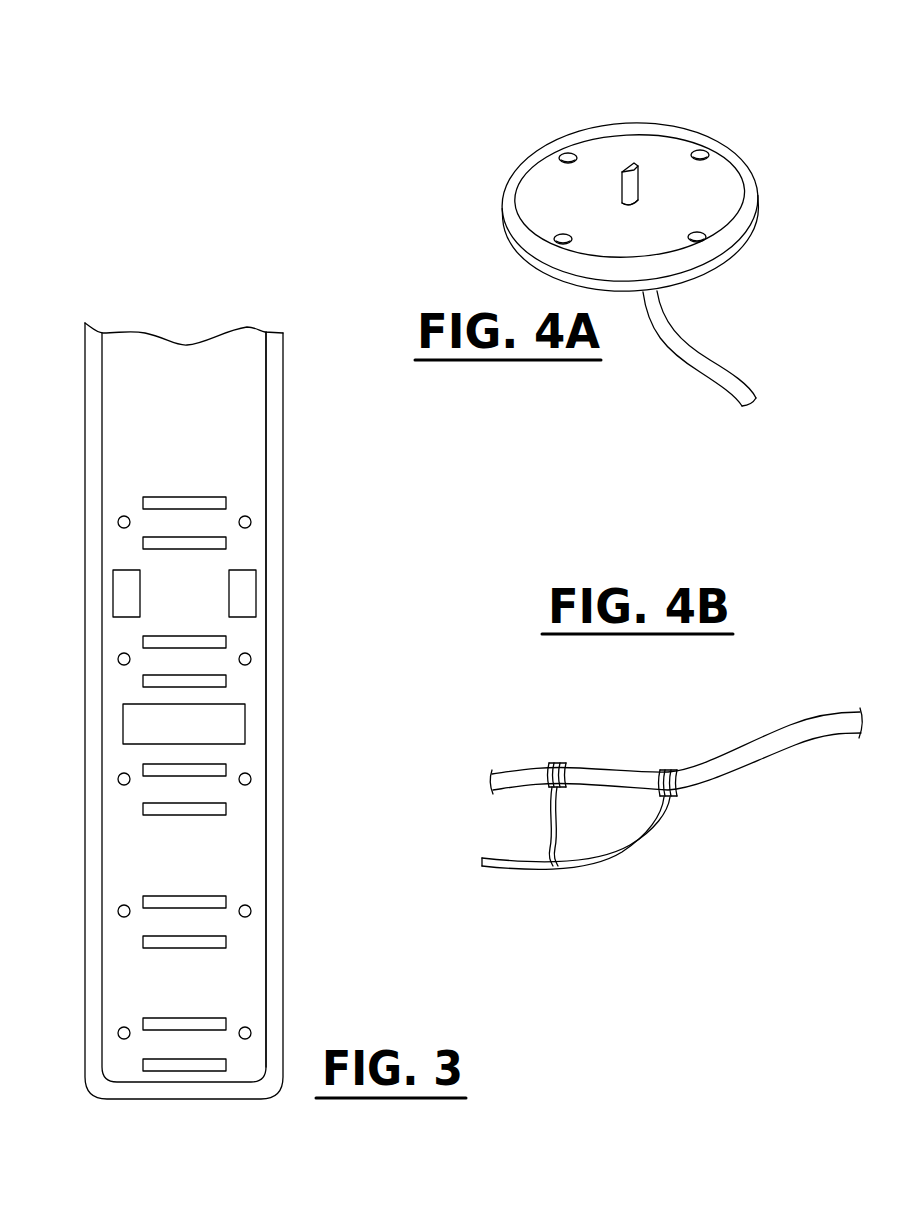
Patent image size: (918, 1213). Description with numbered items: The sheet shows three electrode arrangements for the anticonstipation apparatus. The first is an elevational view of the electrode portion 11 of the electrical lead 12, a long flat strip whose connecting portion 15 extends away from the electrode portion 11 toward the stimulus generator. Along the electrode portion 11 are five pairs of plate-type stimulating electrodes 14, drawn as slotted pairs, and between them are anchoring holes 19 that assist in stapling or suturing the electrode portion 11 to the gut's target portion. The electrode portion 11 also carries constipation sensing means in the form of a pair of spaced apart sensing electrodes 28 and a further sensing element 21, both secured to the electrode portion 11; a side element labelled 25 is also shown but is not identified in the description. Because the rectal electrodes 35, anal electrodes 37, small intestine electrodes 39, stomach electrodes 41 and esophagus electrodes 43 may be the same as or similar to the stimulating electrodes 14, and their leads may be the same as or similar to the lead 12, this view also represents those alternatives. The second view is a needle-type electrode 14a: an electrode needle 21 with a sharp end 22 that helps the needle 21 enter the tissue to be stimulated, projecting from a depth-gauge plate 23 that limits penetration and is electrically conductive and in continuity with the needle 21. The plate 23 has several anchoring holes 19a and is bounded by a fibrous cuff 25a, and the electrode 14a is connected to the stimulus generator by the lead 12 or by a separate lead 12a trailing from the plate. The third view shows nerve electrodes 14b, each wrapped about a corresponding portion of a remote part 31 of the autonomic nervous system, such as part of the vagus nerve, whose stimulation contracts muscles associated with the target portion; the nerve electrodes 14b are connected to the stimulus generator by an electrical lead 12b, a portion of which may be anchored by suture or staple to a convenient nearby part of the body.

In FIG. 3, the electrode portion 11 is at (254, 850).
In FIG. 3, the electrical lead 12 is at (262, 681).
In FIG. 4A, the separate lead 12a is at (742, 385).
In FIG. 4B, the electrical lead 12b is at (512, 866).
In FIG. 3, the stimulating electrodes 14 is at (300, 784).
In FIG. 4A, the needle-type electrode 14a is at (623, 212).
In FIG. 4B, the nerve electrode 14b is at (668, 770).
In FIG. 3, the connecting portion 15 is at (175, 361).
In FIG. 3, the anchoring holes 19 is at (118, 658).
In FIG. 4A, the anchoring holes 19a is at (702, 238).
In FIG. 3, the electrode needle 21 is at (240, 722).
In FIG. 4A, the electrode needle 21 is at (642, 187).
In FIG. 4A, the sharp end 22 is at (637, 170).
In FIG. 4A, the depth-gauge plate 23 is at (725, 179).
In FIG. 3, the side wall 25 is at (275, 497).
In FIG. 4A, the fibrous cuff 25a is at (755, 199).
In FIG. 3, the sensing electrodes 28 is at (138, 595).
In FIG. 4B, the remote part 31 is at (800, 742).
In FIG. 3, the rectal electrodes 35 is at (184, 661).
In FIG. 3, the anal electrodes 37 is at (184, 789).
In FIG. 3, the small intestine electrodes 39 is at (184, 922).
In FIG. 3, the stomach electrodes 41 is at (184, 1044).
In FIG. 3, the esophagus electrodes 43 is at (184, 1044).